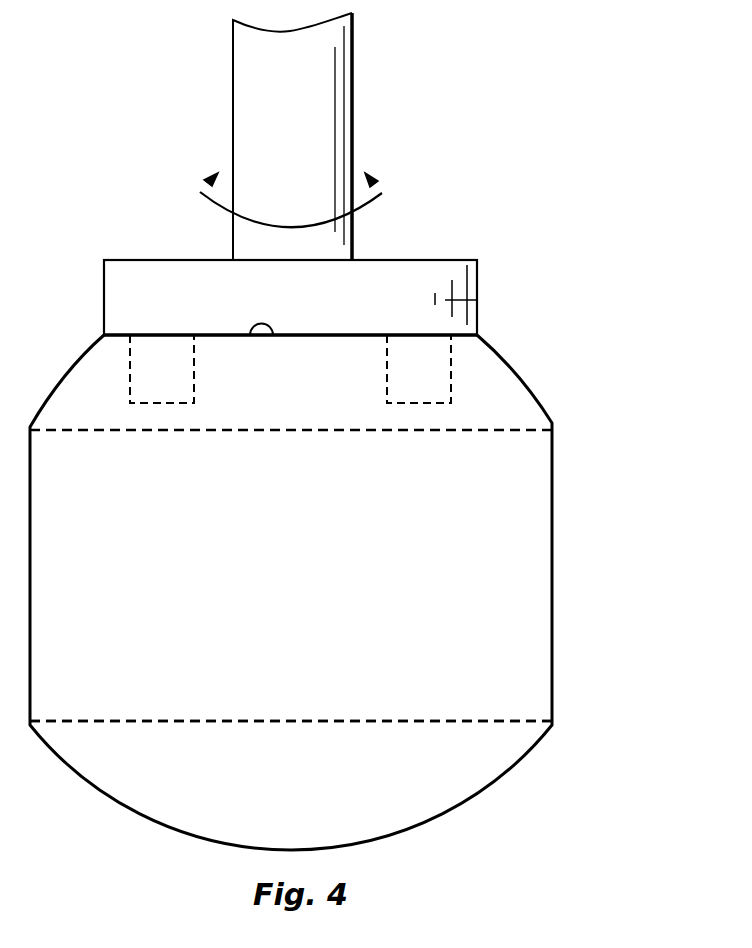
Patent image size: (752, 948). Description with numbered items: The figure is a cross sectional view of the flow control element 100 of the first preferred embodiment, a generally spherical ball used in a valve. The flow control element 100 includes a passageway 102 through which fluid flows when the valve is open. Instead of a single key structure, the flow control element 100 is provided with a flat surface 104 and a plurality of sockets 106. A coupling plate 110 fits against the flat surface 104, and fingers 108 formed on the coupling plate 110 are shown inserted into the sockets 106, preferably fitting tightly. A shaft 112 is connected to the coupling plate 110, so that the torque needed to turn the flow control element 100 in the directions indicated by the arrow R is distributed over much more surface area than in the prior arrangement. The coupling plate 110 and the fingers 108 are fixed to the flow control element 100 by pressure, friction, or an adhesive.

The flow control element 100 is at (547, 407).
The passageway 102 is at (480, 720).
The flat surface 104 is at (273, 335).
The sockets 106 is at (194, 376).
The fingers 108 is at (130, 370).
The coupling plate 110 is at (477, 300).
The shaft 112 is at (338, 128).
The arrow R is at (382, 200).